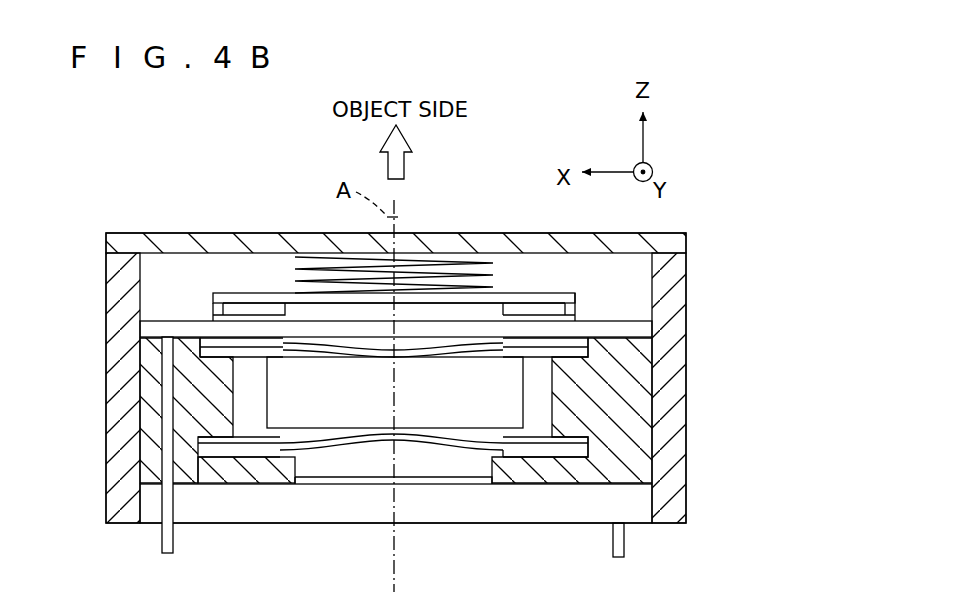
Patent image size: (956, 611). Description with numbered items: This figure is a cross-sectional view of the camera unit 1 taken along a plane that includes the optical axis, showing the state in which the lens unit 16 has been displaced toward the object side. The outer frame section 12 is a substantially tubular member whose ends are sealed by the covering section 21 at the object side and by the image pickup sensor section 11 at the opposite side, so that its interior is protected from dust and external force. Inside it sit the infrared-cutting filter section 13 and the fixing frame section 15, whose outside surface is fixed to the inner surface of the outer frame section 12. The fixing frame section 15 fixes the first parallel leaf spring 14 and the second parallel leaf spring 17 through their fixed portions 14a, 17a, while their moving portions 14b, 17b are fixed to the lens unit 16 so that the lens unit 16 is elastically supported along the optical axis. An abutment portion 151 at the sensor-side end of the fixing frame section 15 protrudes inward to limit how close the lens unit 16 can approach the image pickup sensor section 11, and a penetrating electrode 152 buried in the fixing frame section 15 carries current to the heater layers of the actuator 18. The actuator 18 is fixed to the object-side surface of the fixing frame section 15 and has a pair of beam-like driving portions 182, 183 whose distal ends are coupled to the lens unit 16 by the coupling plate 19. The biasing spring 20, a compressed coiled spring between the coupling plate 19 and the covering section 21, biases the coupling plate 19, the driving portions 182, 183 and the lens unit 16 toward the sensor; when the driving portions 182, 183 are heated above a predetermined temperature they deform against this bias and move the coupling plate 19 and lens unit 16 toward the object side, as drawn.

The camera unit 1 is at (214, 163).
The image pickup sensor section 11 is at (530, 512).
The outer frame section 12 is at (118, 472).
The infrared-cutting filter section 13 is at (446, 486).
The first parallel leaf spring 14 is at (330, 438).
The fixed portion 14a is at (580, 451).
The moving portion 14b is at (367, 436).
The fixing frame section 15 is at (637, 408).
The abutment portion 151 is at (257, 470).
The penetrating electrode 152 is at (167, 371).
The lens unit 16 is at (287, 412).
The second parallel leaf spring 17 is at (300, 342).
The fixed portion 17a is at (568, 347).
The moving portion 17b is at (362, 352).
The actuator 18 is at (588, 315).
The driving portion 182 is at (462, 323).
The driving portion 183 is at (210, 318).
The coupling plate 19 is at (228, 292).
The biasing spring 20 is at (480, 283).
The covering section 21 is at (185, 246).